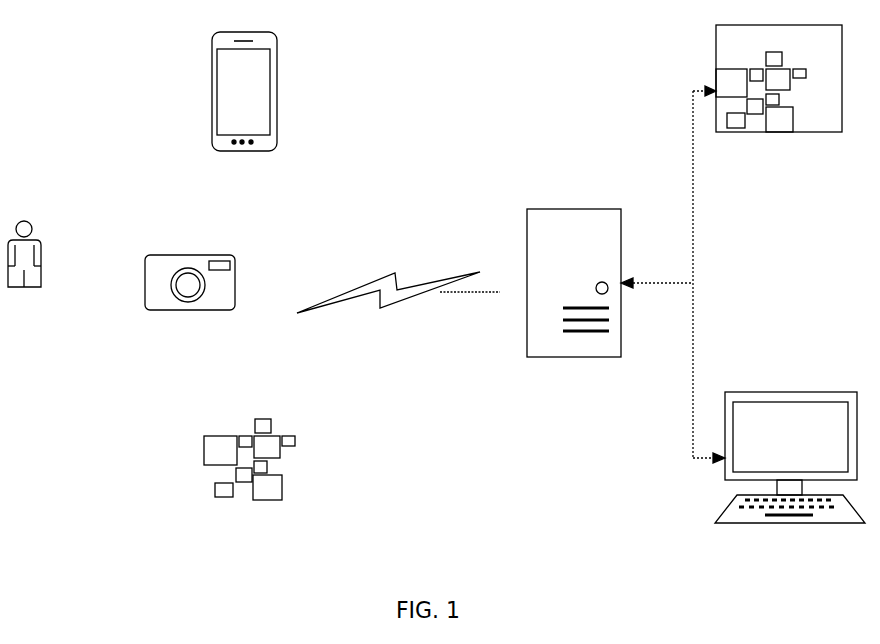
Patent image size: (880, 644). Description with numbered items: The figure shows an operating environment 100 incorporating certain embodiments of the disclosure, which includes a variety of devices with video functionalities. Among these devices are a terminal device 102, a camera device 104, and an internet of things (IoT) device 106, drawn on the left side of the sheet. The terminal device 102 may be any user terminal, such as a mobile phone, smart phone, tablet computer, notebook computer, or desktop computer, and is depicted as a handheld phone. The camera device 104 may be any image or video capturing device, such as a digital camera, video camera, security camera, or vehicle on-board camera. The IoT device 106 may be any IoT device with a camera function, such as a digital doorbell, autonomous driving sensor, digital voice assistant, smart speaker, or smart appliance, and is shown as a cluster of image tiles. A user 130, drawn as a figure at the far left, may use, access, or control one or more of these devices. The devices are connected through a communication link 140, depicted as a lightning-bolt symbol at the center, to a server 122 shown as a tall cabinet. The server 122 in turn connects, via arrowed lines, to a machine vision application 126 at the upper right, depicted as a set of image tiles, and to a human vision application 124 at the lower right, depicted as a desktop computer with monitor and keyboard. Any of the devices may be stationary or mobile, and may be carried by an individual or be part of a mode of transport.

The operating environment 100 is at (96, 58).
The terminal device 102 is at (348, 251).
The camera device 104 is at (337, 292).
The internet of things (IoT) device 106 is at (348, 342).
The server 122 is at (592, 390).
The human vision application 124 is at (809, 565).
The machine vision application 126 is at (779, 165).
The user 130 is at (43, 318).
The communication link 140 is at (403, 303).